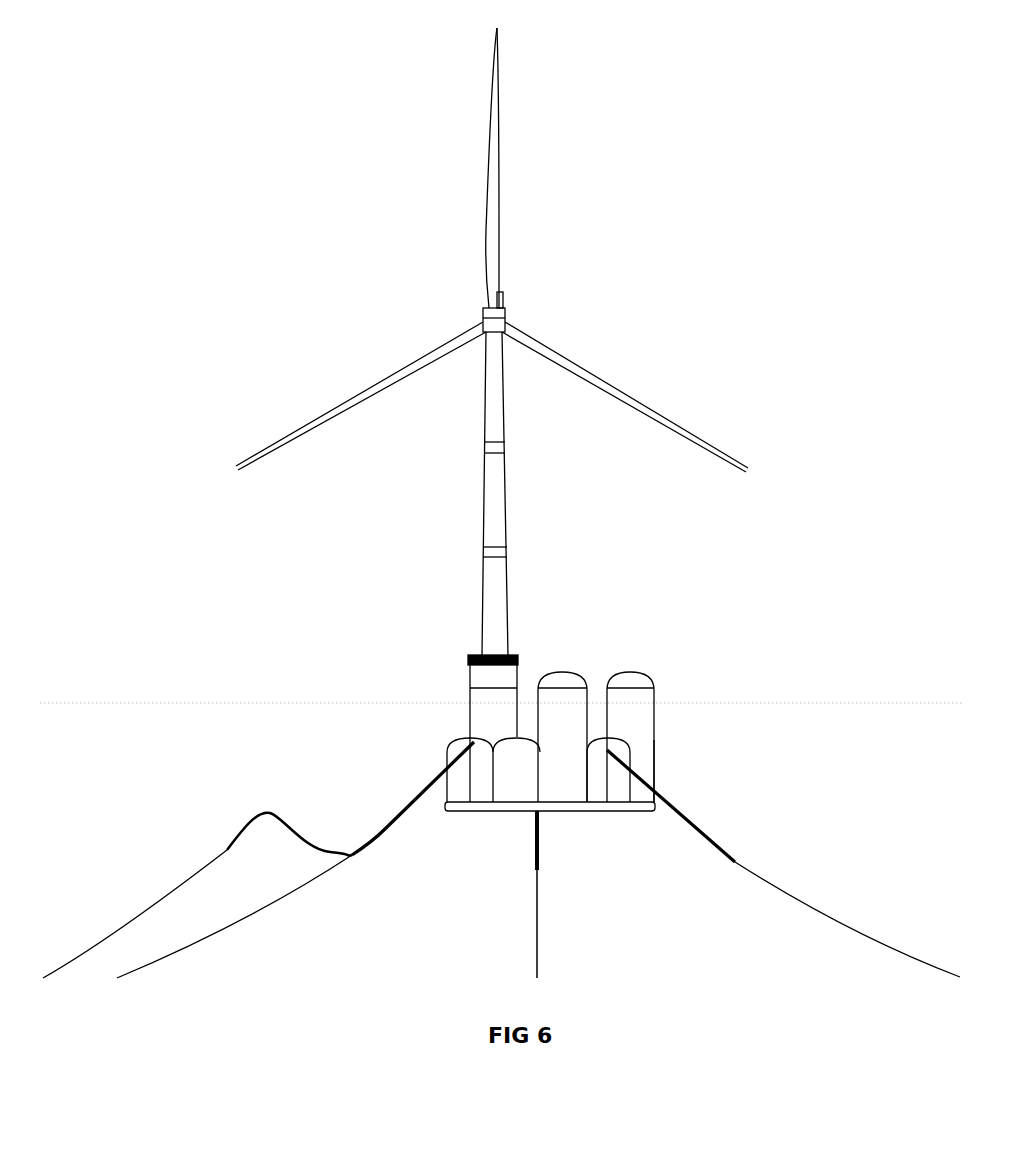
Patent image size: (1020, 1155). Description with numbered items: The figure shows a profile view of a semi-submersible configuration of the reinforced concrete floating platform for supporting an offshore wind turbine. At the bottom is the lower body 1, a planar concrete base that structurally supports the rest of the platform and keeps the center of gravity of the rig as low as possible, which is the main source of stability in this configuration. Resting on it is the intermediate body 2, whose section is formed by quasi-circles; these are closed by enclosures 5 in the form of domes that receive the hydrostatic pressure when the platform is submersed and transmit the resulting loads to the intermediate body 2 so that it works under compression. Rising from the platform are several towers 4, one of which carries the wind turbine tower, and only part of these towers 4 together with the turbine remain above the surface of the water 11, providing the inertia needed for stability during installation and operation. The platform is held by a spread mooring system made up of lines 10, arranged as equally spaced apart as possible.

The lower body 1 is at (600, 810).
The intermediate body 2 is at (660, 773).
The towers 4 is at (464, 688).
The enclosures 5 is at (623, 662).
The lines 10 is at (543, 900).
The surface of the water 11 is at (903, 702).